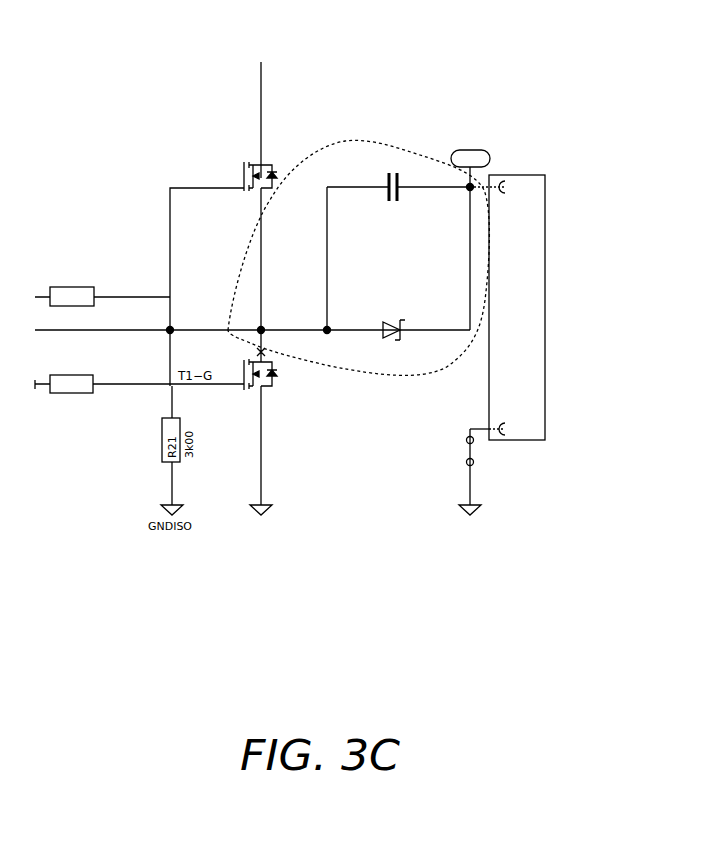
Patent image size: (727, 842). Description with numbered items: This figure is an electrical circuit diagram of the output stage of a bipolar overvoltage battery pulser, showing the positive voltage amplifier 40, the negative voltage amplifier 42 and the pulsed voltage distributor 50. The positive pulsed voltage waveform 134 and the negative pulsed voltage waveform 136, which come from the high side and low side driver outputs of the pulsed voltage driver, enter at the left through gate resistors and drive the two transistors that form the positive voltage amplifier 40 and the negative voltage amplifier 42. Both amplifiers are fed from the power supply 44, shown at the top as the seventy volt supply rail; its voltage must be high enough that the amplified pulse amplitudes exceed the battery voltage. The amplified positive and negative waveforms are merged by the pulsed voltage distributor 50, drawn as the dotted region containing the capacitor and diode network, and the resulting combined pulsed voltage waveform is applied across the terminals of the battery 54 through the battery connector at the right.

The power supply 44 is at (262, 58).
The positive voltage amplifier 40 is at (272, 164).
The negative voltage amplifier 42 is at (268, 386).
The pulsed voltage distributor 50 is at (380, 373).
The battery 54 is at (545, 307).
The positive pulsed voltage waveform 134 is at (35, 297).
The negative pulsed voltage waveform 136 is at (35, 384).